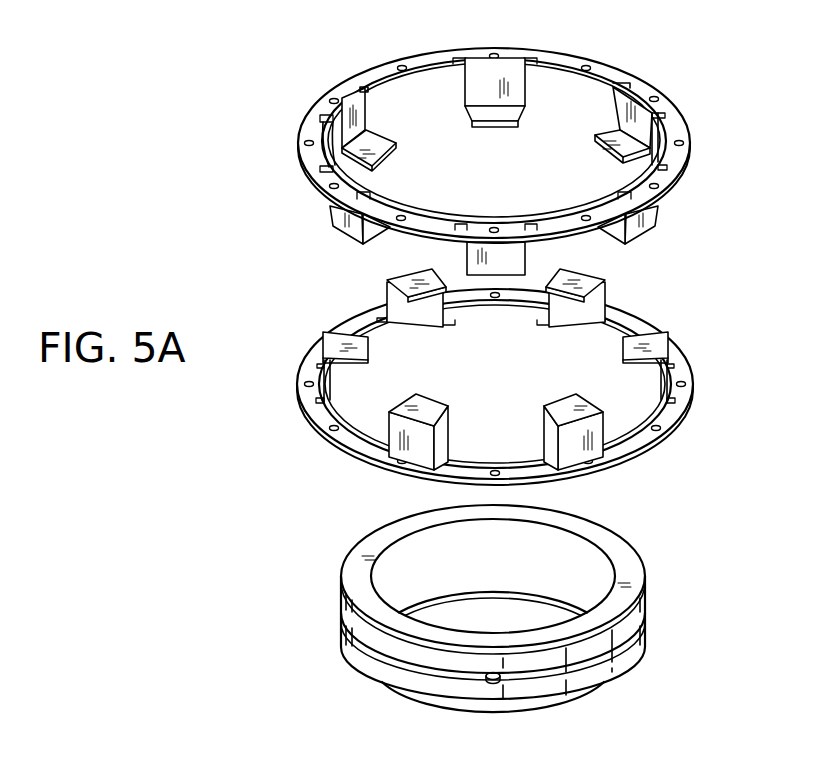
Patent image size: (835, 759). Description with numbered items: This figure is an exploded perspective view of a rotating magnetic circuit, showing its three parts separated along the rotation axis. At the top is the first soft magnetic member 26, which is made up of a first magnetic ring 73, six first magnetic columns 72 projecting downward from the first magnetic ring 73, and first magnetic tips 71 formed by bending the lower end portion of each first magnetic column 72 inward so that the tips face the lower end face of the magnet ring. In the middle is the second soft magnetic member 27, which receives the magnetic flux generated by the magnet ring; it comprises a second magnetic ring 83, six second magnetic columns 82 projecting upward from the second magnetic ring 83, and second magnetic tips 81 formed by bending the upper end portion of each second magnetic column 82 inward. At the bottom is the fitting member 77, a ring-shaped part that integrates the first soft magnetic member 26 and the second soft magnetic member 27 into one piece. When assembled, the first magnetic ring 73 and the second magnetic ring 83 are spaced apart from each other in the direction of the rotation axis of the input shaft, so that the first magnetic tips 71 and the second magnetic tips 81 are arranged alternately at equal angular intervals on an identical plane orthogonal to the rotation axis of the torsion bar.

The first soft magnetic member 26 is at (488, 140).
The first magnetic tips 71 is at (604, 128).
The first magnetic columns 72 is at (641, 111).
The first magnetic ring 73 is at (672, 163).
The second soft magnetic member 27 is at (483, 377).
The second magnetic tips 81 is at (655, 330).
The second magnetic columns 82 is at (663, 378).
The second magnetic ring 83 is at (663, 425).
The fitting member 77 is at (328, 570).